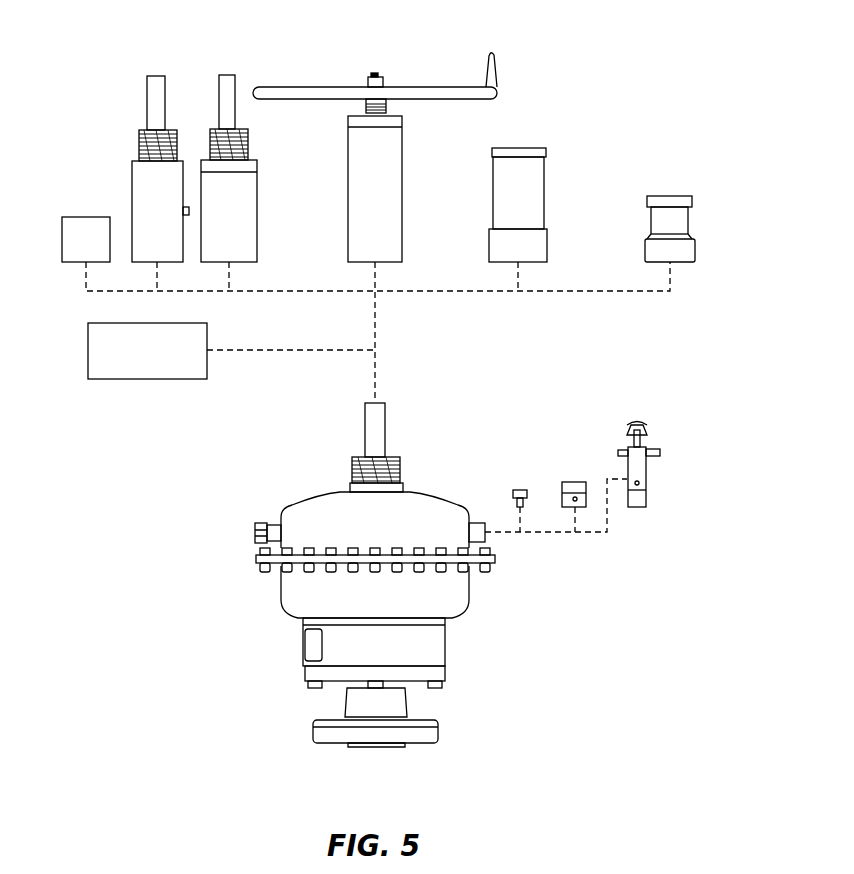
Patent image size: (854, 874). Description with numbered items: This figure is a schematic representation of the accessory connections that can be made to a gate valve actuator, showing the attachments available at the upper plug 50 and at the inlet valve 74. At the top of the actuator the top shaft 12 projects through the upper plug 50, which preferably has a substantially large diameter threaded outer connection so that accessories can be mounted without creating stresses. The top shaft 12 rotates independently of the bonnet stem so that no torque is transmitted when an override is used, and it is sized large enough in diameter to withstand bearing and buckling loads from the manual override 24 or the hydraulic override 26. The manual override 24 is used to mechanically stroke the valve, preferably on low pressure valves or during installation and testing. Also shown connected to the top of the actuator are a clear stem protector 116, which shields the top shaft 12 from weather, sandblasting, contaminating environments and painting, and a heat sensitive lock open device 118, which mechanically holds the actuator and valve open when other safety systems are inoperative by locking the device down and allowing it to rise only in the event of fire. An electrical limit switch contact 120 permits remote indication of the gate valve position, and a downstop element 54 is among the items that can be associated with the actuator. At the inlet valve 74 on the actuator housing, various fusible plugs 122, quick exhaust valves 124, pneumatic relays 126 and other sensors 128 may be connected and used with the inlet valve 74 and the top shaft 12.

The top shaft 12 is at (386, 415).
The manual override 24 is at (299, 89).
The hydraulic override 26 is at (222, 75).
The upper plug 50 is at (401, 465).
The downstop element 54 is at (89, 220).
The inlet valve 74 is at (486, 536).
The clear stem protector 116 is at (530, 152).
The heat sensitive lock open device 118 is at (668, 202).
The electrical limit switch contact 120 is at (148, 74).
The fusible plug 122 is at (515, 488).
The quick exhaust valve 124 is at (570, 480).
The pneumatic relay 126 is at (647, 490).
The sensor 128 is at (122, 380).